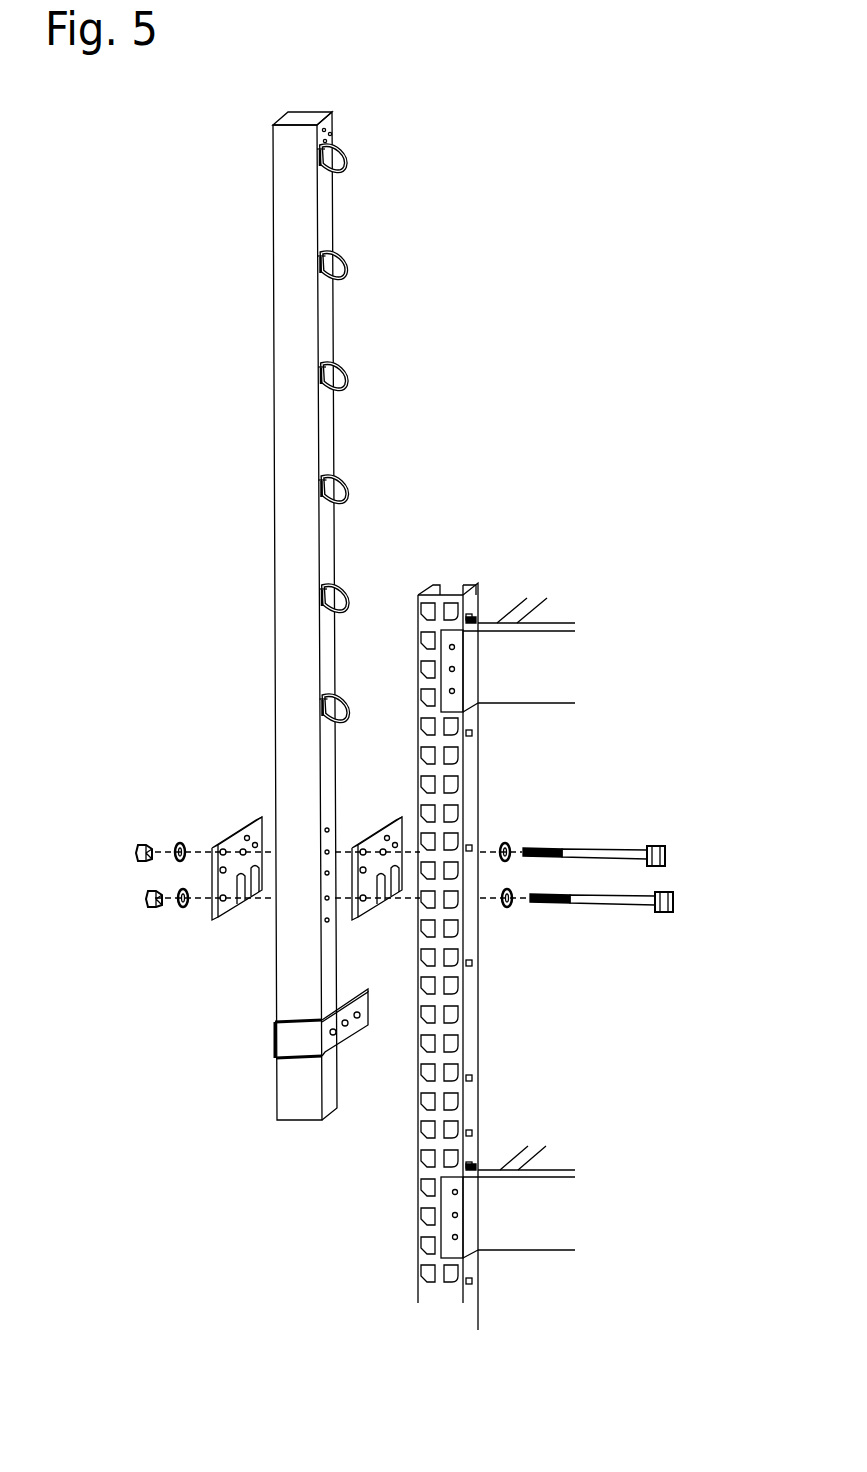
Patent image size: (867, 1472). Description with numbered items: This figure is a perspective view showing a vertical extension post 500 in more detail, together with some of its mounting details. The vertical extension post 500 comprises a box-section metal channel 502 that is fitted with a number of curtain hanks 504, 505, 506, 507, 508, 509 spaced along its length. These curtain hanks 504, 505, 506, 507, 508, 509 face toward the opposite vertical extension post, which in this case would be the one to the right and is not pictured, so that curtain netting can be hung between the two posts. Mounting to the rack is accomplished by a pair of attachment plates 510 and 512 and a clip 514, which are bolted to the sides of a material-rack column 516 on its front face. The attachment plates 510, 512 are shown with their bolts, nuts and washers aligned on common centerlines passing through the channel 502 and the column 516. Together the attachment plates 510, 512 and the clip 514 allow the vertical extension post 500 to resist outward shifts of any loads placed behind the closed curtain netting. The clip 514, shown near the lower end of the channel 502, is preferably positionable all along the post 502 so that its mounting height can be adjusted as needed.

The vertical extension post 500 is at (532, 142).
The box-section metal channel 502 is at (281, 224).
The curtain hank 504 is at (340, 172).
The curtain hank 505 is at (340, 277).
The curtain hank 506 is at (340, 387).
The curtain hank 507 is at (340, 500).
The curtain hank 508 is at (340, 600).
The curtain hank 509 is at (340, 717).
The attachment plate 510 is at (238, 828).
The attachment plate 512 is at (366, 905).
The clip 514 is at (345, 1038).
The material-rack column 516 is at (479, 976).